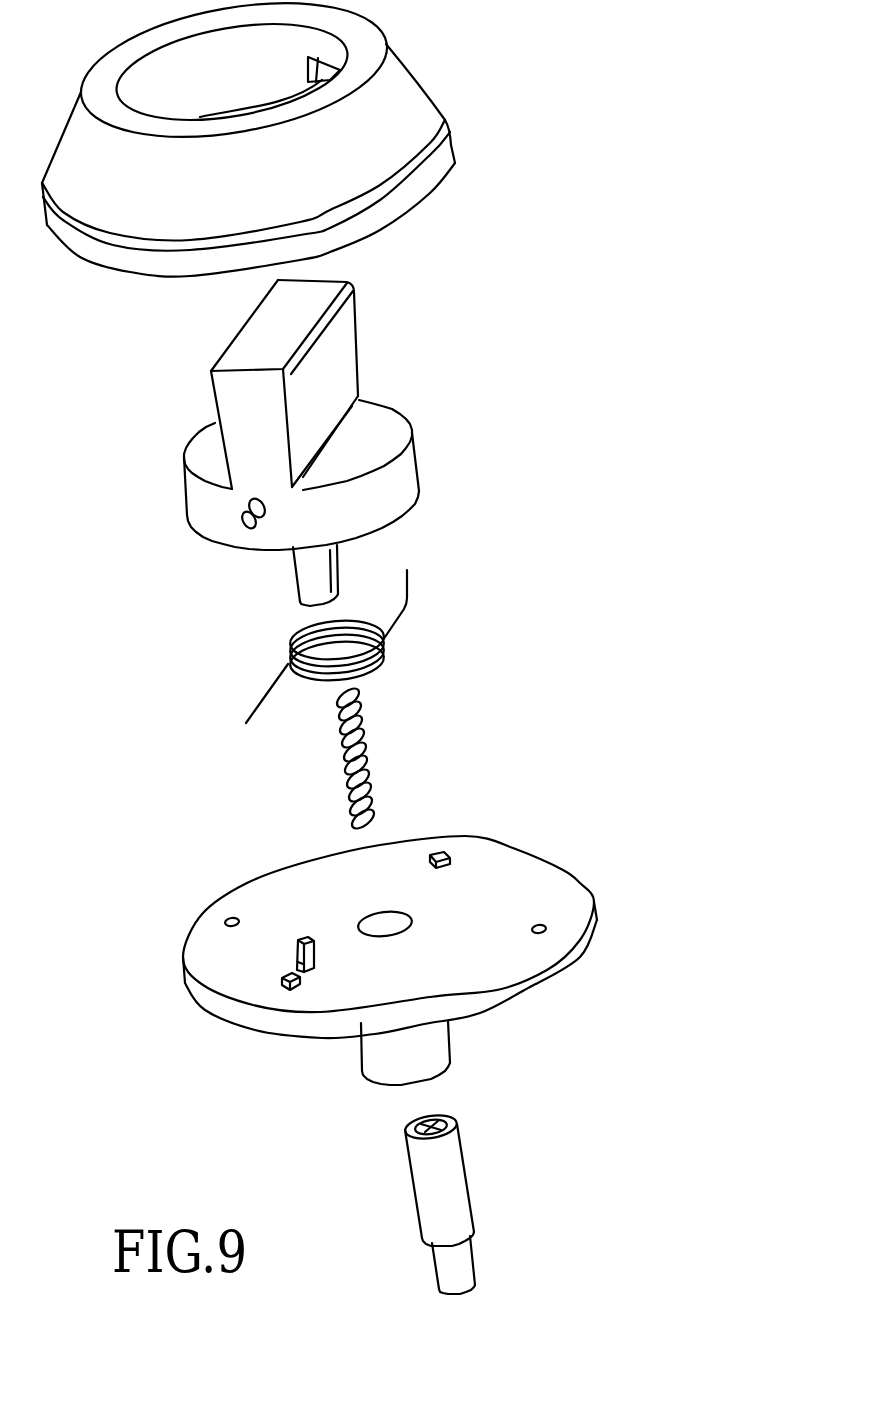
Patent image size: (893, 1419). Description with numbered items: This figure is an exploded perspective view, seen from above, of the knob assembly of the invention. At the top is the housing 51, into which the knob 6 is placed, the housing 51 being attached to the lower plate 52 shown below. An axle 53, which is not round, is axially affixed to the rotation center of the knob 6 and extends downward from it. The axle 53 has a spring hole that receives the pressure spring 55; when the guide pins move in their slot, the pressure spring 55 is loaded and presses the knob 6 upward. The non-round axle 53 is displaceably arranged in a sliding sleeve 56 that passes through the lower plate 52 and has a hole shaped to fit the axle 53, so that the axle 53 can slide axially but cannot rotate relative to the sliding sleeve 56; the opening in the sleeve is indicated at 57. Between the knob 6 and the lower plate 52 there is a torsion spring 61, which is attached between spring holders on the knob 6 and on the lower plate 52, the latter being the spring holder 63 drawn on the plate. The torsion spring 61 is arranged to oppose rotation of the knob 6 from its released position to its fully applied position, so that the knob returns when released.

The housing 51 is at (407, 90).
The knob 6 is at (333, 372).
The axle 53 is at (338, 572).
The torsion spring 61 is at (387, 653).
The pressure spring 55 is at (370, 760).
The lower plate 52 is at (537, 865).
The spring holder 63 is at (303, 938).
The socket hole 57 is at (432, 1122).
The sliding sleeve 56 is at (455, 1188).